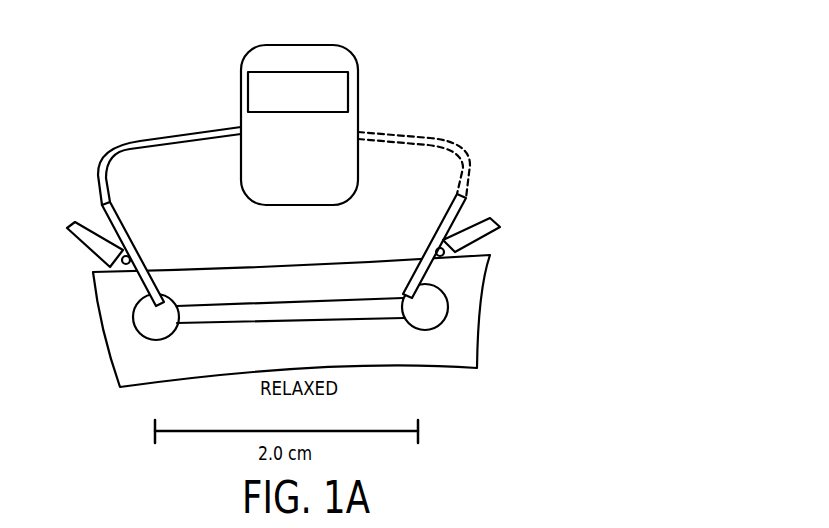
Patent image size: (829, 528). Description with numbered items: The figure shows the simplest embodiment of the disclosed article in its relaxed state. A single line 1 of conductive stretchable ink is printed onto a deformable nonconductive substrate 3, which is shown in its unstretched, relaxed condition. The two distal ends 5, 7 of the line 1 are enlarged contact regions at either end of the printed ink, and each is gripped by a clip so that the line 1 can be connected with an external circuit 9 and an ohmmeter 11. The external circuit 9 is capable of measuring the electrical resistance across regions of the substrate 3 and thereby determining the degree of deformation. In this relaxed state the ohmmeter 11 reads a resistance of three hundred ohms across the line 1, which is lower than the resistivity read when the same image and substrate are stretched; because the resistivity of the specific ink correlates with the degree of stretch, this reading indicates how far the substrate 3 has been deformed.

The line 1 is at (200, 304).
The deformable nonconductive substrate 3 is at (395, 350).
The distal end 5 is at (138, 315).
The distal end 7 is at (441, 308).
The external circuit 9 is at (420, 131).
The ohmmeter 11 is at (357, 70).